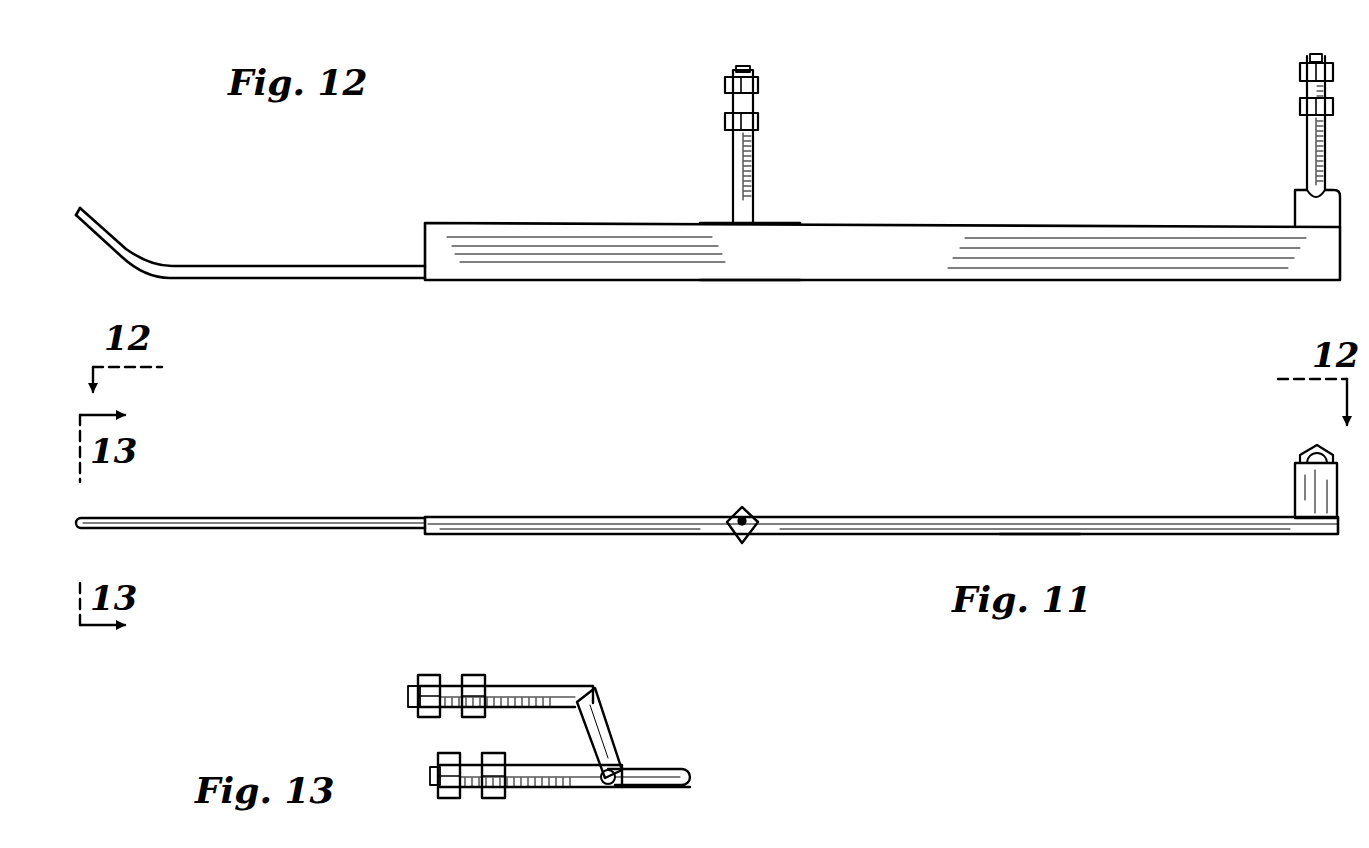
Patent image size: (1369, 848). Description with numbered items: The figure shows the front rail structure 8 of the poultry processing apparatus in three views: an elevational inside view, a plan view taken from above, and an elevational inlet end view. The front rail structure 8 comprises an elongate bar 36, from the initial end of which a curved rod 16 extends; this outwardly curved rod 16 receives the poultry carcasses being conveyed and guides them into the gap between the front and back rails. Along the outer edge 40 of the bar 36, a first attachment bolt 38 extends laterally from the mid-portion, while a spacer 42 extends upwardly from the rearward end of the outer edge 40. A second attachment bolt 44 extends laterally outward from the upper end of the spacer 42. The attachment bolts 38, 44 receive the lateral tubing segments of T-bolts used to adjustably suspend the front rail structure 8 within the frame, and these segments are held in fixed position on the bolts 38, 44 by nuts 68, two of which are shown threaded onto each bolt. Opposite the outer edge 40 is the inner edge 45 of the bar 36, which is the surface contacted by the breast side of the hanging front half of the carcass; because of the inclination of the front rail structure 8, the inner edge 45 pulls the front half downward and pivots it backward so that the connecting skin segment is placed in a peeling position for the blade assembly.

In FIG. 12, the front rail structure 8 is at (708, 187).
In FIG. 11, the front rail structure 8 is at (707, 468).
In FIG. 12, the curved rod 16 is at (255, 268).
In FIG. 11, the curved rod 16 is at (250, 520).
In FIG. 13, the curved rod 16 is at (690, 785).
In FIG. 12, the elongate bar 36 is at (902, 245).
In FIG. 11, the elongate bar 36 is at (920, 521).
In FIG. 13, the elongate bar 36 is at (687, 771).
In FIG. 12, the first attachment bolt 38 is at (754, 169).
In FIG. 11, the first attachment bolt 38 is at (748, 515).
In FIG. 13, the first attachment bolt 38 is at (432, 778).
In FIG. 12, the outer edge 40 is at (807, 224).
In FIG. 12, the spacer 42 is at (1307, 212).
In FIG. 11, the spacer 42 is at (1305, 497).
In FIG. 13, the spacer 42 is at (605, 735).
In FIG. 12, the second attachment bolt 44 is at (1312, 138).
In FIG. 11, the second attachment bolt 44 is at (1310, 452).
In FIG. 13, the second attachment bolt 44 is at (517, 690).
In FIG. 12, the inner edge 45 is at (793, 282).
In FIG. 11, the inner edge 45 is at (1036, 521).
In FIG. 12, the nuts 68 is at (755, 120).
In FIG. 11, the nuts 68 is at (735, 516).
In FIG. 13, the nuts 68 is at (425, 683).